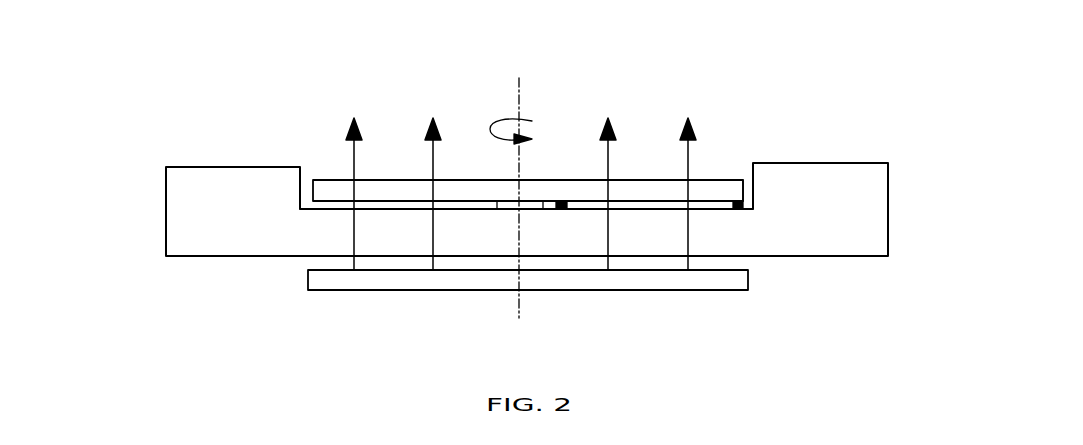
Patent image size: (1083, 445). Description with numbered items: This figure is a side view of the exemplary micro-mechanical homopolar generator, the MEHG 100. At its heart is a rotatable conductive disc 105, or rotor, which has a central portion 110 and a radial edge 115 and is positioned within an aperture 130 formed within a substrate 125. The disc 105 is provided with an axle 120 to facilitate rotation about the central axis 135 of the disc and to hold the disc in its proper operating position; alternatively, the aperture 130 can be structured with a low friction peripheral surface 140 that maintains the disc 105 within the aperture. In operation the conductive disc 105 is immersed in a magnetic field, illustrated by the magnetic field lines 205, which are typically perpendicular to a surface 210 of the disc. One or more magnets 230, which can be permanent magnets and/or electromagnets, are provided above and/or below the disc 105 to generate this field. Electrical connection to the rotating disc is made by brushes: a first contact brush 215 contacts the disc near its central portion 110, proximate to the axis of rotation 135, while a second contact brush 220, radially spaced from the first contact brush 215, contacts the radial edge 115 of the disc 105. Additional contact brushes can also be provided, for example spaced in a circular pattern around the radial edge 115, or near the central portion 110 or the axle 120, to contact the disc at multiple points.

The MEHG 100 is at (130, 150).
The conductive disc 105 is at (460, 190).
The central portion 110 is at (542, 179).
The radial edge 115 is at (735, 183).
The axle 120 is at (512, 205).
The substrate 125 is at (868, 212).
The aperture 130 is at (305, 186).
The central axis 135 is at (519, 90).
The low friction peripheral surface 140 is at (755, 187).
The magnetic field lines 205 is at (607, 150).
The surface 210 is at (712, 180).
The first contact brush 215 is at (567, 210).
The second contact brush 220 is at (743, 210).
The magnets 230 is at (347, 280).